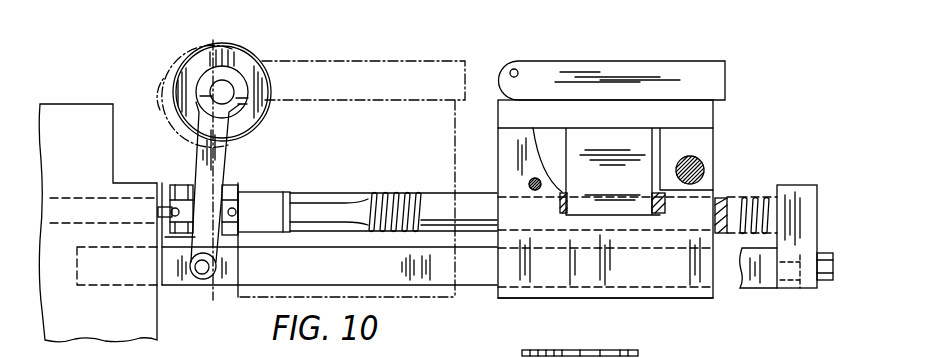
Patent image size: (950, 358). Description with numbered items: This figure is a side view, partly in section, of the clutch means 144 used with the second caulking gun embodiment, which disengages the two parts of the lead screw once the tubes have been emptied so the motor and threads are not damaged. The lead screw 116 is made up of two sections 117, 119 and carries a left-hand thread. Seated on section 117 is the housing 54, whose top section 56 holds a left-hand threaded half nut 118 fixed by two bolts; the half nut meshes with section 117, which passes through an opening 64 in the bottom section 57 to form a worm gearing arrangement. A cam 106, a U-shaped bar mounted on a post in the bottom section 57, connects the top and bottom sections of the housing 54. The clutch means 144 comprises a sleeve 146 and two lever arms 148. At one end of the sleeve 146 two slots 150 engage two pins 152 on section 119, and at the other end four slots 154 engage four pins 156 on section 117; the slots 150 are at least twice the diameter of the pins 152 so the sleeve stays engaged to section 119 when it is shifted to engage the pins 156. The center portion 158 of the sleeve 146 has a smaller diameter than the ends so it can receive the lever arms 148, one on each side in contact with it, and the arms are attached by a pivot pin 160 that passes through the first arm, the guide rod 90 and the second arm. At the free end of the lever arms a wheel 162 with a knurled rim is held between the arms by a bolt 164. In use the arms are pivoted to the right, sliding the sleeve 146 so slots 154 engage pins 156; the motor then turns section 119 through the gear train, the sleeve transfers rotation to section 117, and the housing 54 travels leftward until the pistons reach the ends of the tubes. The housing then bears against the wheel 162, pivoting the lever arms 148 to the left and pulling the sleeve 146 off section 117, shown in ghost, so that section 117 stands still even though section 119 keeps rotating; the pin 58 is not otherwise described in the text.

The housing 54 is at (447, 55).
The top section 56 is at (697, 132).
The bottom section 57 is at (527, 293).
The pin 58 is at (704, 167).
The opening 64 is at (716, 235).
The guide rod 90 is at (440, 280).
The cam 106 is at (682, 80).
The lead screw 116 is at (376, 180).
The section 117 is at (403, 190).
The half nut 118 is at (572, 205).
The section 119 is at (82, 210).
The clutch means 144 is at (268, 50).
The sleeve 146 is at (181, 240).
The lever arms 148 is at (232, 74).
The slots 150 is at (186, 192).
The pins 152 is at (158, 212).
The slots 154 is at (232, 200).
The pins 156 is at (236, 216).
The center portion 158 is at (221, 268).
The pivot pin 160 is at (199, 273).
The wheel 162 is at (258, 83).
The bolt 164 is at (217, 82).